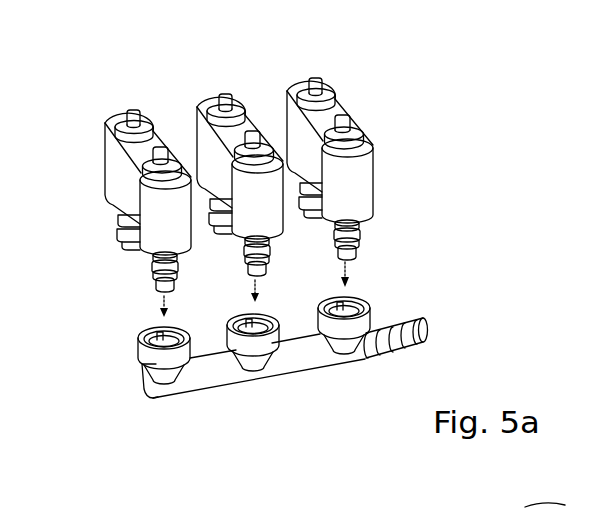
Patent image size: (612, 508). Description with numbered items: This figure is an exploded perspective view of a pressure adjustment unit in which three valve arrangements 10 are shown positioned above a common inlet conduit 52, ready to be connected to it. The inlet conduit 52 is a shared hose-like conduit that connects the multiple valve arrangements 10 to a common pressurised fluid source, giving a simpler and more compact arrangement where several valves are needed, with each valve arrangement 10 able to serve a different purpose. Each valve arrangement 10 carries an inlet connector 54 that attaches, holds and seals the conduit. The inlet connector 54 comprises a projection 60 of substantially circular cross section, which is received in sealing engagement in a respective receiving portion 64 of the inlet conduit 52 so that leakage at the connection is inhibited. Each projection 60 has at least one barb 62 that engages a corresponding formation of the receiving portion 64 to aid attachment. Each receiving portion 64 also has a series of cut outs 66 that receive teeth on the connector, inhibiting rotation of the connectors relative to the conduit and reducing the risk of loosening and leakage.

The valve arrangement 10 is at (157, 133).
The inlet conduit 52 is at (213, 368).
The inlet connector 54 is at (140, 262).
The projection 60 is at (170, 279).
The barb 62 is at (152, 282).
The receiving portion 64 is at (365, 333).
The cut outs 66 is at (353, 293).